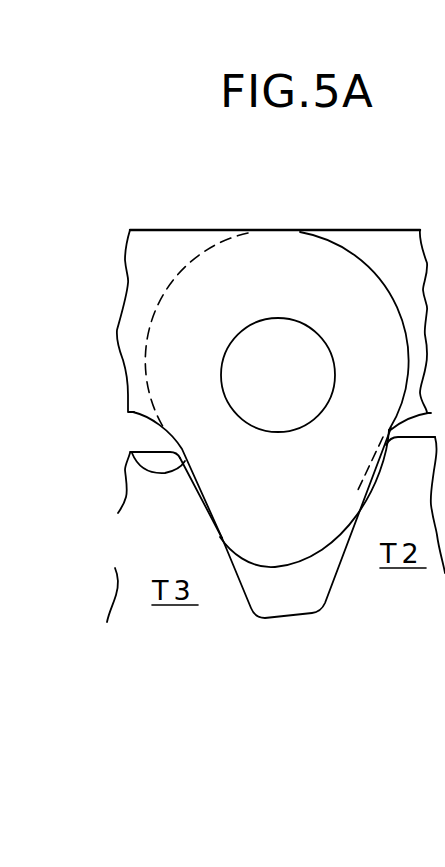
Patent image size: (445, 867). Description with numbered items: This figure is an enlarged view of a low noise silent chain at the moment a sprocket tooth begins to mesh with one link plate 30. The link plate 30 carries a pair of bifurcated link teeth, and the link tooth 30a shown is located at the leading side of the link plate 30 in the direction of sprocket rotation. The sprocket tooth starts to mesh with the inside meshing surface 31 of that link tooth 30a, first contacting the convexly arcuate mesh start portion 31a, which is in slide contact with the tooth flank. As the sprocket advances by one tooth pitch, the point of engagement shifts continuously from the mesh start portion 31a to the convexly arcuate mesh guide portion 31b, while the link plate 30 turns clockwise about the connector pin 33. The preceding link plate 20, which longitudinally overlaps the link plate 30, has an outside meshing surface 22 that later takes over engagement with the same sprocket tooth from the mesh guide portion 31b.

The link plate 20 is at (403, 219).
The outside meshing surface 22 is at (128, 450).
The link plate 30 is at (164, 219).
The link tooth 30a is at (287, 543).
The inside meshing surface 31 is at (35, 523).
The convexly arcuate mesh start portion 31a is at (222, 538).
The convexly arcuate mesh guide portion 31b is at (90, 489).
The connector pin 33 is at (292, 317).